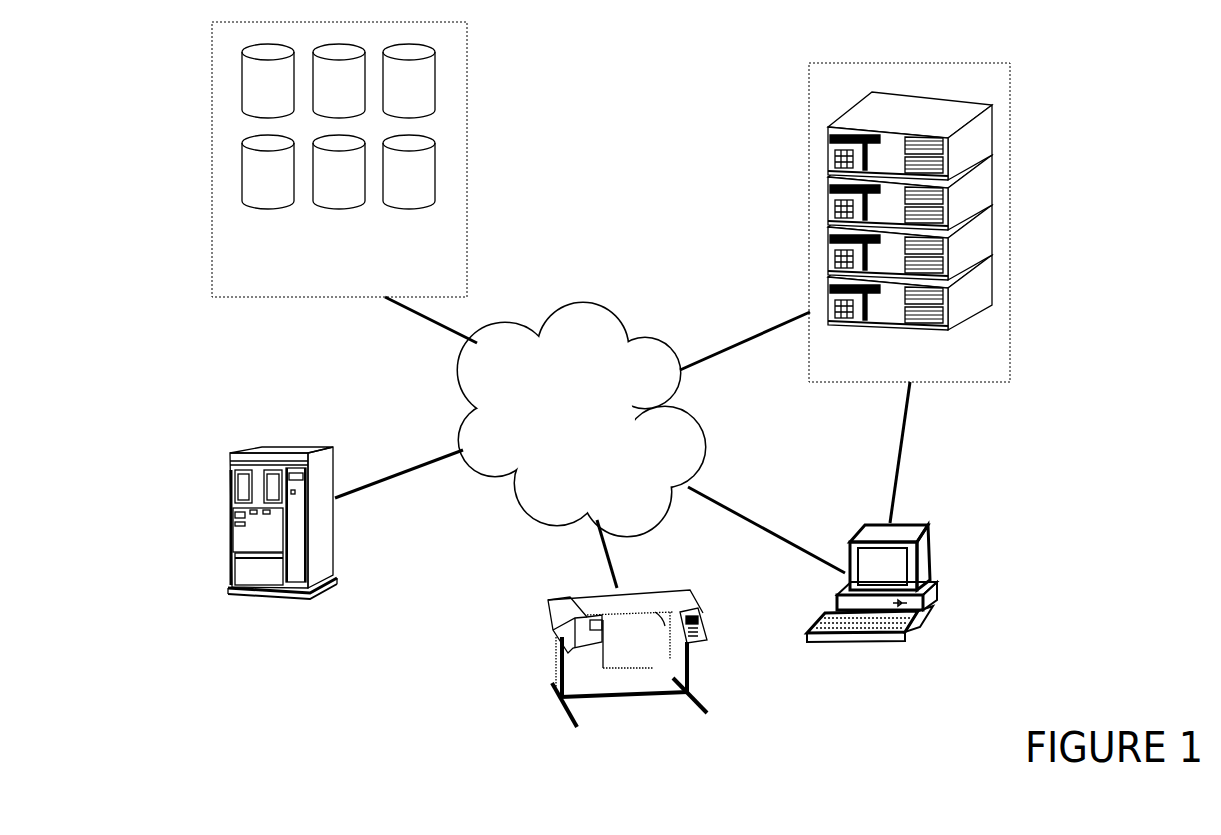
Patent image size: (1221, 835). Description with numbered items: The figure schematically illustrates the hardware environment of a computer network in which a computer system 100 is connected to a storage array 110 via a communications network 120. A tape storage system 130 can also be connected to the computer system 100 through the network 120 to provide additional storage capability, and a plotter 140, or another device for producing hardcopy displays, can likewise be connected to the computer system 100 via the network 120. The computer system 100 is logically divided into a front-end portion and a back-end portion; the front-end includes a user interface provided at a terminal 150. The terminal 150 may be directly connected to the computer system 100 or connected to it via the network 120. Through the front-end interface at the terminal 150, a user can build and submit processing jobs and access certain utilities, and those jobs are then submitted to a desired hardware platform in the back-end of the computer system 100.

The computer system 100 is at (982, 368).
The storage array 110 is at (350, 280).
The communications network 120 is at (588, 430).
The tape storage system 130 is at (230, 480).
The plotter 140 is at (548, 608).
The terminal 150 is at (850, 530).